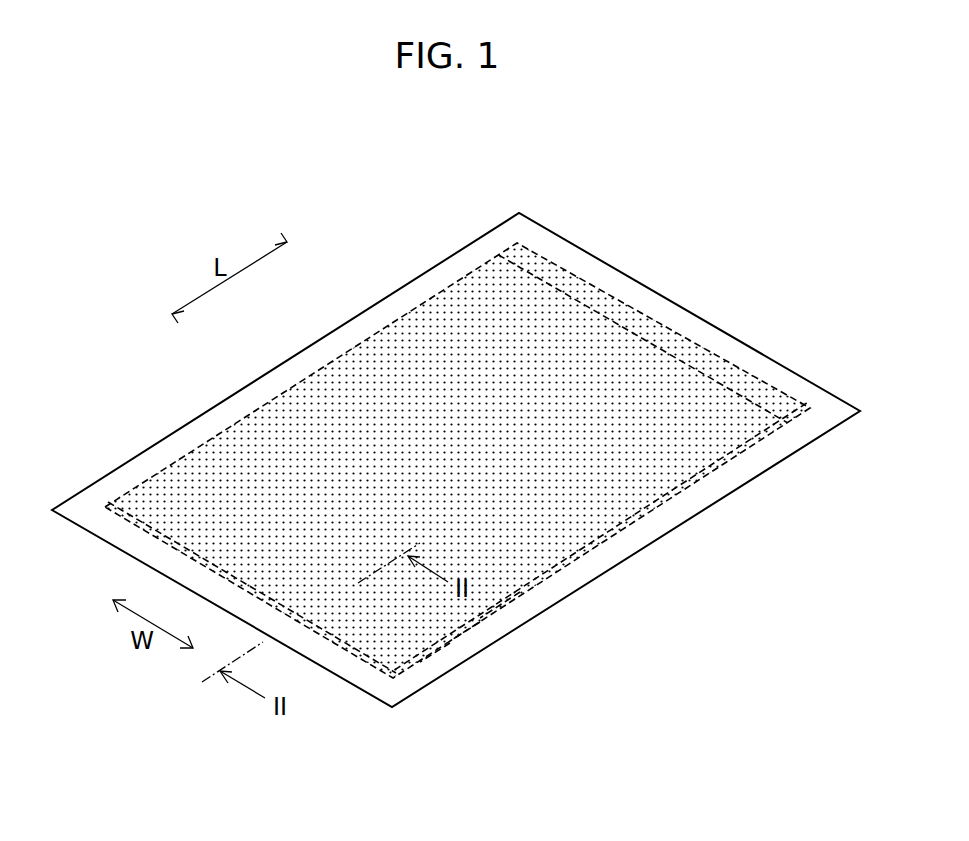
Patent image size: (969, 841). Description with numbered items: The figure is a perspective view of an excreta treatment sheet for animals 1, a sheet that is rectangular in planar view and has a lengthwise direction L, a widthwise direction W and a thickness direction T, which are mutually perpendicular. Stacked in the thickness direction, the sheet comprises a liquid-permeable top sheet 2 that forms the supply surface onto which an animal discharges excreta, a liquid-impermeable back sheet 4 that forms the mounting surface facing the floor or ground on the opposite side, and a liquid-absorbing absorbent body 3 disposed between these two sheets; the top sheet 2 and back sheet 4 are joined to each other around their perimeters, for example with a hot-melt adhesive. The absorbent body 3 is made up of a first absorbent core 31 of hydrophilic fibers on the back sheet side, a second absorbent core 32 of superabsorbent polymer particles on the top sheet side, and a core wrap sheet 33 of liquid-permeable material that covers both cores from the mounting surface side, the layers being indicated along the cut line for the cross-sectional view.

The excreta treatment sheet for animals 1 is at (700, 222).
The liquid-permeable top sheet 2 is at (378, 322).
The absorbent body 3 is at (600, 628).
The liquid-impermeable back sheet 4 is at (645, 527).
The first absorbent core 31 is at (452, 639).
The second absorbent core 32 is at (480, 608).
The core wrap sheet 33 is at (422, 663).